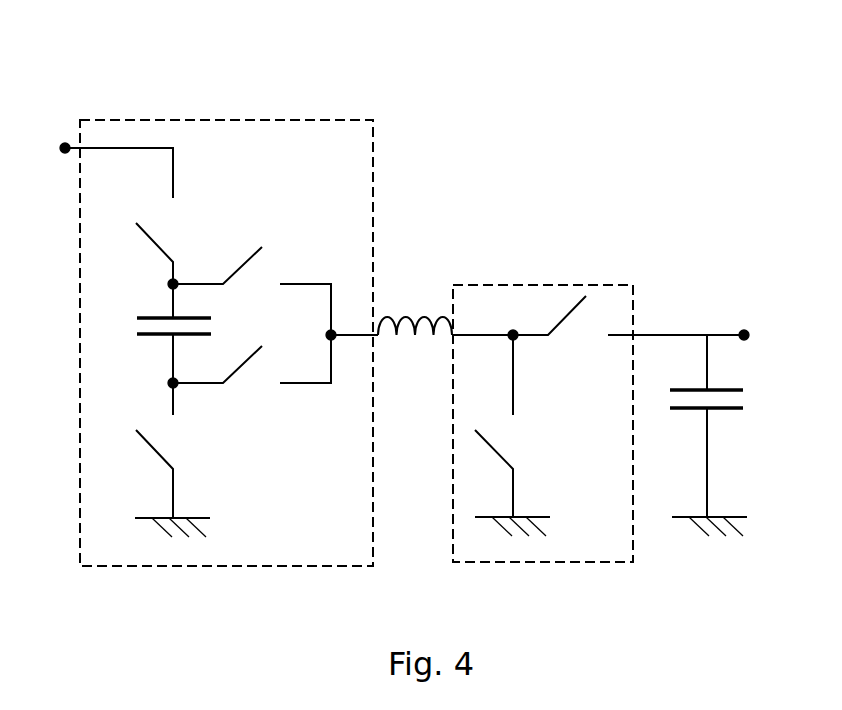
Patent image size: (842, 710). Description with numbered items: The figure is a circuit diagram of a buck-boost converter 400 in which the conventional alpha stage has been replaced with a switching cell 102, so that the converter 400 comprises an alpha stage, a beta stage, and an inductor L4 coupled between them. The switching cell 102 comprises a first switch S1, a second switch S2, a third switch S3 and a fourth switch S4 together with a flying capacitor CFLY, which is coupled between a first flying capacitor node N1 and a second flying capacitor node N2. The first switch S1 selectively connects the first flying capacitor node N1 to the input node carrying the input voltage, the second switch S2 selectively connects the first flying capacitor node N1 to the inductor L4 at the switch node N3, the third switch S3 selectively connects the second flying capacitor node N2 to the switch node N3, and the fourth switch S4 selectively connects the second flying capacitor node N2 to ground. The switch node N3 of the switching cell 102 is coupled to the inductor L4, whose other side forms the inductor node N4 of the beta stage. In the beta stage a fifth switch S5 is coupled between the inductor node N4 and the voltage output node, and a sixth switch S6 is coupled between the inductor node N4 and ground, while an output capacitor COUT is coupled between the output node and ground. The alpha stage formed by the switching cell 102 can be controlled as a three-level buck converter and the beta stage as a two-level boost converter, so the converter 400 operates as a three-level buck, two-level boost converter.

The buck-boost converter 400 is at (452, 158).
The switching cell 102 is at (356, 157).
The first switch S1 is at (180, 253).
The second switch S2 is at (219, 282).
The third switch S3 is at (219, 380).
The fourth switch S4 is at (177, 474).
The fifth switch S5 is at (550, 330).
The sixth switch S6 is at (511, 473).
The first flying capacitor node N1 is at (150, 285).
The second flying capacitor node N2 is at (153, 389).
The switch node N3 is at (346, 323).
The inductor node N4 is at (492, 323).
The inductor L4 is at (415, 311).
The flying capacitor CFLY is at (158, 333).
The output capacitor COUT is at (731, 426).